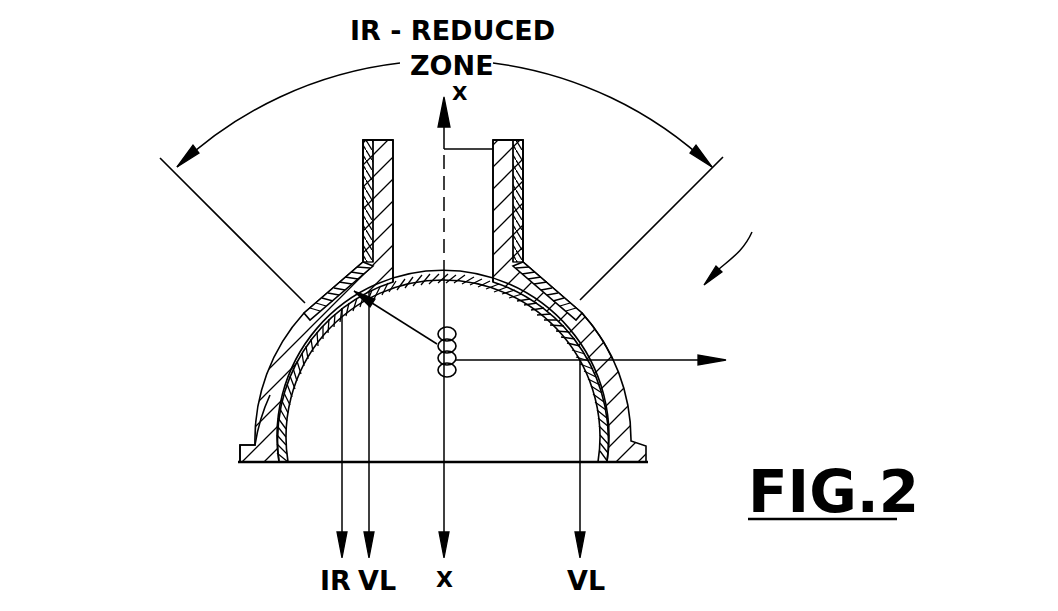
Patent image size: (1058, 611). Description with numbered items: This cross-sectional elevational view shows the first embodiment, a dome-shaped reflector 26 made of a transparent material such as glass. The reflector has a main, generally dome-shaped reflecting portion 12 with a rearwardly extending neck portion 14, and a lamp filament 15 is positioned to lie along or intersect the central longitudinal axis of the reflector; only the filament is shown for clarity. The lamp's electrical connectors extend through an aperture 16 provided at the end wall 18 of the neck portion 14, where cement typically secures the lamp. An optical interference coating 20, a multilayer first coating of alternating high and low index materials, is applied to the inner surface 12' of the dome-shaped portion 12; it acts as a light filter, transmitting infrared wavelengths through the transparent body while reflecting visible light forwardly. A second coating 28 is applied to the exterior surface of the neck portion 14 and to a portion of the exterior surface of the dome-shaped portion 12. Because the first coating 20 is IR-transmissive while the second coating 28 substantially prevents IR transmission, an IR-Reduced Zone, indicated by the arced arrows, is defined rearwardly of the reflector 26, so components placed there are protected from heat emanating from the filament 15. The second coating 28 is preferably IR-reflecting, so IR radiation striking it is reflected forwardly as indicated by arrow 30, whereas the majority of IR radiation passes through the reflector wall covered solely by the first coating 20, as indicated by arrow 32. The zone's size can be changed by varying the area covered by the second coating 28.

The dome-shaped reflecting portion 12 is at (456, 329).
The interior surface of dome-shaped portion 12' is at (273, 457).
The neck portion 14 is at (461, 184).
The filament 15 is at (438, 372).
The aperture 16 is at (476, 134).
The end wall 18 is at (382, 148).
The optical interference coating 20 is at (300, 366).
The dome-shaped reflector 26 is at (746, 243).
The second coating 28 is at (318, 292).
The arrow indicating forwardly reflected IR radiation 30 is at (342, 500).
The arrow indicating transmitted IR radiation 32 is at (654, 362).